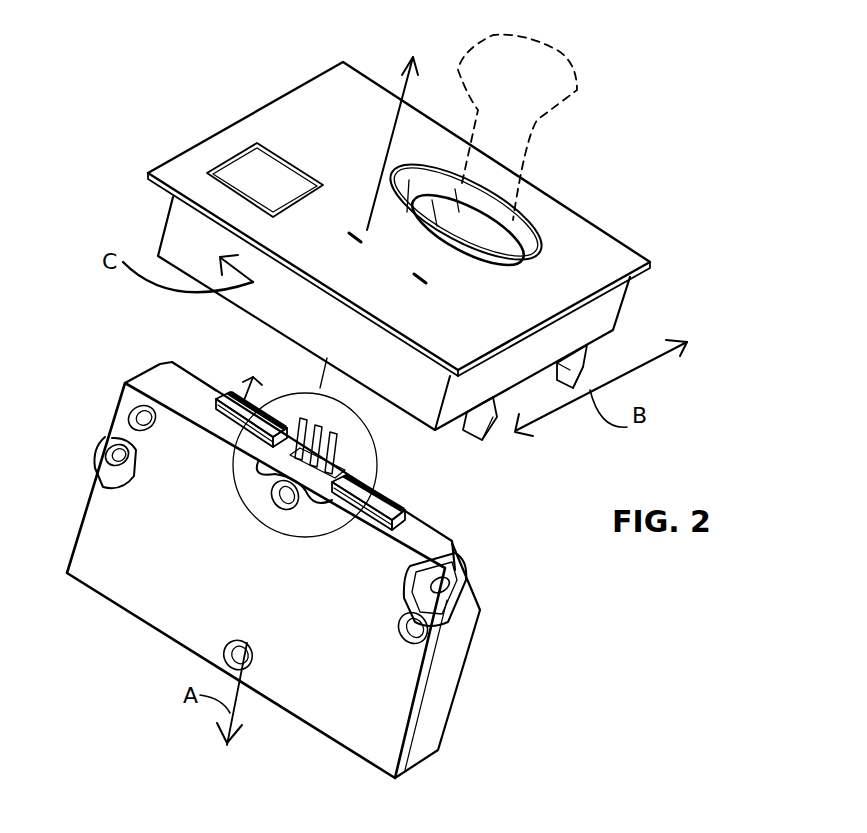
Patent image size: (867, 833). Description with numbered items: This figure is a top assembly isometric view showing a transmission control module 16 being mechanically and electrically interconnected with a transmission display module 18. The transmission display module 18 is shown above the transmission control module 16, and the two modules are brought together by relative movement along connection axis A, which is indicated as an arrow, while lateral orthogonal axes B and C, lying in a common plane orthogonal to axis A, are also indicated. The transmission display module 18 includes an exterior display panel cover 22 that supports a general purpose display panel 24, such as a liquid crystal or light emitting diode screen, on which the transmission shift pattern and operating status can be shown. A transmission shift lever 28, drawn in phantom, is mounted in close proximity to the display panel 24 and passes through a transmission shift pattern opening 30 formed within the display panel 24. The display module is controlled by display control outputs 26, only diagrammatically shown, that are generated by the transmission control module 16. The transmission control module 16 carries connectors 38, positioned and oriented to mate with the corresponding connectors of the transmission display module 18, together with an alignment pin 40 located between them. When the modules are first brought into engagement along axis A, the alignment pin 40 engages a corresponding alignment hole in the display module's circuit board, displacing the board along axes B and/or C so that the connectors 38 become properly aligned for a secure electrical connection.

The transmission control module 16 is at (457, 693).
The transmission display module 18 is at (600, 313).
The exterior display panel cover 22 is at (626, 258).
The display panel 24 is at (232, 131).
The display control outputs 26 is at (256, 404).
The transmission shift lever 28 is at (583, 72).
The transmission shift pattern opening 30 is at (522, 218).
The connectors 38 is at (243, 400).
The alignment pin 40 is at (337, 452).